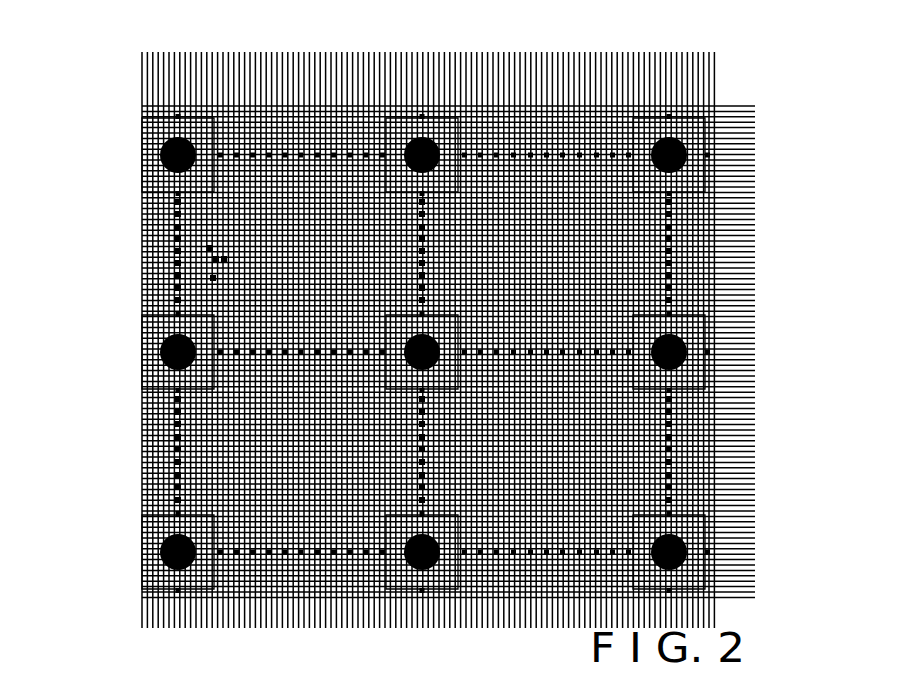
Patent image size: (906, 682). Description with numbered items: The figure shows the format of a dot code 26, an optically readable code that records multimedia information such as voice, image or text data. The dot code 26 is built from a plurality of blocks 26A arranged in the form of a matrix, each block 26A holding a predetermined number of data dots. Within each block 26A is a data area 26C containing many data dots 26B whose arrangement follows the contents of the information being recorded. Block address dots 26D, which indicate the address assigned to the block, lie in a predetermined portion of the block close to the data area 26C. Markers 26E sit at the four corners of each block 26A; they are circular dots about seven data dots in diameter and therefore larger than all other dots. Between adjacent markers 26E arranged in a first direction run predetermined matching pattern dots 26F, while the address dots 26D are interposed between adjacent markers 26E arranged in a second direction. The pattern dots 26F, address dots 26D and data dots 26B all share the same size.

The dot code 26 is at (770, 452).
The block 26A is at (490, 520).
The data dot 26B is at (213, 260).
The data area 26C is at (280, 302).
The block address dot 26D is at (172, 290).
The marker 26E is at (180, 137).
The matching pattern dot 26F is at (318, 150).